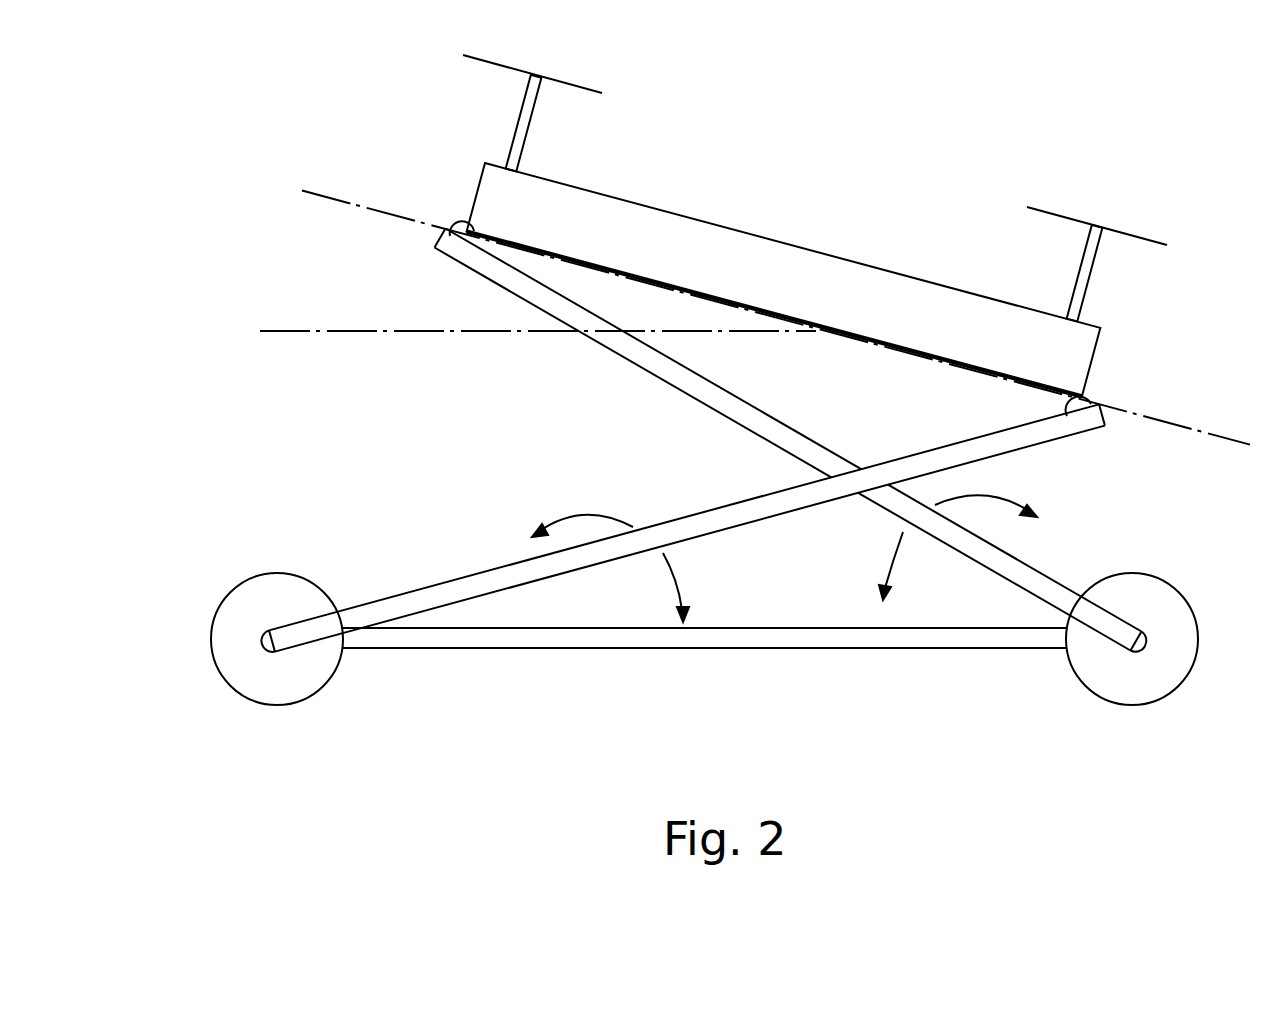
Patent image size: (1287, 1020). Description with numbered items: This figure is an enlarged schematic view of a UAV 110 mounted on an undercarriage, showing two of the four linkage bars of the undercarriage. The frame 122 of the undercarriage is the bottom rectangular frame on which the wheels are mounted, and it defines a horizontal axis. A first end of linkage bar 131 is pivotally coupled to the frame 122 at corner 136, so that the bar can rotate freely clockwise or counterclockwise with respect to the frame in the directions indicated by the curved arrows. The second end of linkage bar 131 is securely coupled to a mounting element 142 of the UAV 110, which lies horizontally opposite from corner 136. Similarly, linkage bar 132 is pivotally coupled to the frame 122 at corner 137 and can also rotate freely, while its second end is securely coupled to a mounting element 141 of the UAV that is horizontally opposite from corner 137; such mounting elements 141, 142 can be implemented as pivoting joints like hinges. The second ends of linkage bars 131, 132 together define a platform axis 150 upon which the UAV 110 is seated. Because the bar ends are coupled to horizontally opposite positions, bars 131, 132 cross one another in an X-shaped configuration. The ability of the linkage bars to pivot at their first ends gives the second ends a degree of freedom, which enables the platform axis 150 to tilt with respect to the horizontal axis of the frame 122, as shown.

The UAV 110 is at (764, 238).
The frame 122 is at (512, 652).
The linkage bar 131 is at (413, 590).
The linkage bar 132 is at (448, 258).
The corner 136 is at (263, 643).
The corner 137 is at (1150, 642).
The first roller / pivot 141 is at (457, 227).
The mounting element 142 is at (1098, 400).
The platform axis 150 is at (900, 350).